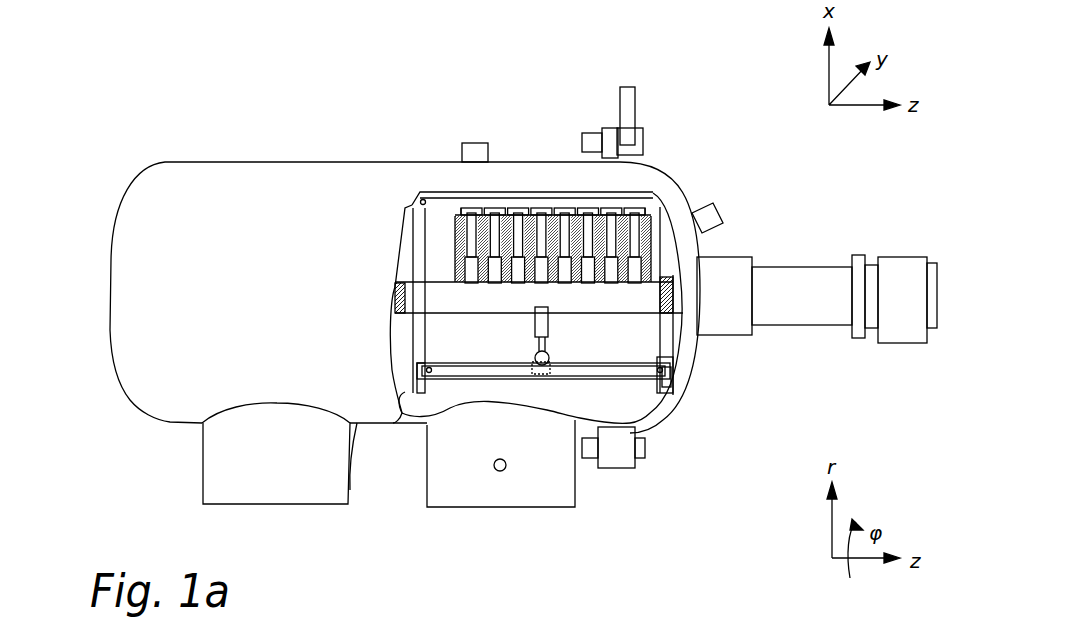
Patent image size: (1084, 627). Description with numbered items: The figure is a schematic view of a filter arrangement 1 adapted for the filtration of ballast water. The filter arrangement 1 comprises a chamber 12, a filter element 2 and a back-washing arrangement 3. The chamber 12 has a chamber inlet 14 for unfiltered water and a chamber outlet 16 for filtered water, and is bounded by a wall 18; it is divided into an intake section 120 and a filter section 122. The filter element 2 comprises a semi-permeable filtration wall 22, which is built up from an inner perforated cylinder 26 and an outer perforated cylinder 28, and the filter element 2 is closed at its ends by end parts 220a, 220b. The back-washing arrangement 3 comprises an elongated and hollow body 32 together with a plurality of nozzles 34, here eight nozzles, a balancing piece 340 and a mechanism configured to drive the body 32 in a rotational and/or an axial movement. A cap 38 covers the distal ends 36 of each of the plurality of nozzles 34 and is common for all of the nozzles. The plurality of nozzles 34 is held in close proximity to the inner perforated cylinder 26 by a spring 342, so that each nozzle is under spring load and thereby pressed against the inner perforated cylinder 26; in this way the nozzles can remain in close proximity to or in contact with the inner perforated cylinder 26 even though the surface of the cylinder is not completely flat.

The filter arrangement 1 is at (350, 128).
The filter element 2 is at (617, 395).
The back-washing arrangement 3 is at (637, 303).
The chamber 12 is at (178, 372).
The chamber inlet 14 is at (255, 470).
The chamber outlet 16 is at (436, 477).
The wall 18 is at (405, 413).
The semi-permeable filtration wall 22 is at (443, 205).
The inner perforated cylinder 26 is at (658, 348).
The outer perforated cylinder 28 is at (637, 417).
The elongated and hollow body 32 is at (495, 300).
The plurality of nozzles 34 is at (662, 272).
The distal ends 36 is at (668, 228).
The cap 38 is at (618, 215).
The intake section 120 is at (238, 177).
The filter section 122 is at (563, 170).
The end part 220a is at (351, 490).
The end part 220b is at (668, 268).
The balancing piece 340 is at (546, 370).
The spring 342 is at (520, 213).